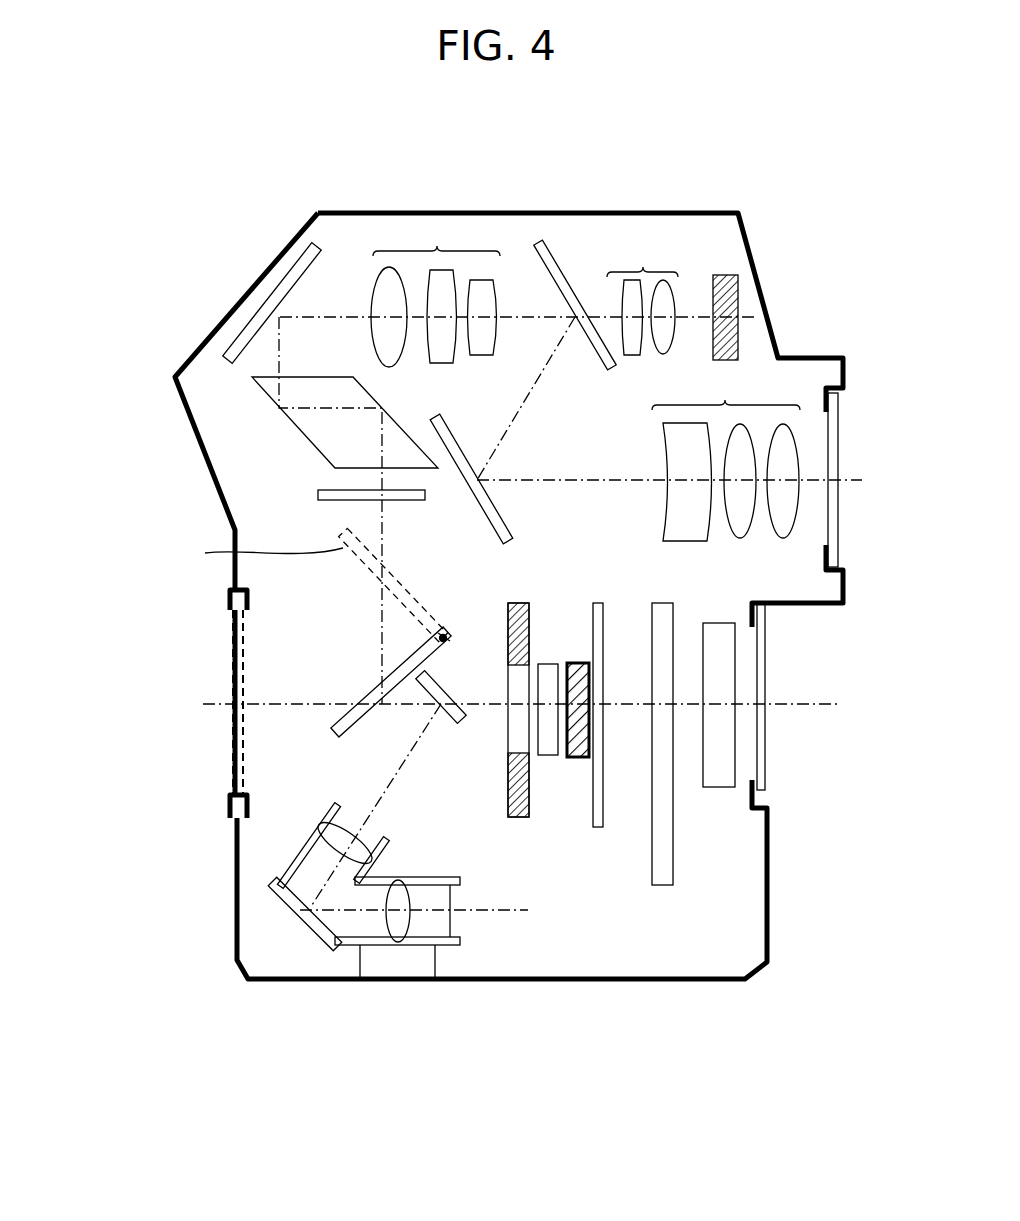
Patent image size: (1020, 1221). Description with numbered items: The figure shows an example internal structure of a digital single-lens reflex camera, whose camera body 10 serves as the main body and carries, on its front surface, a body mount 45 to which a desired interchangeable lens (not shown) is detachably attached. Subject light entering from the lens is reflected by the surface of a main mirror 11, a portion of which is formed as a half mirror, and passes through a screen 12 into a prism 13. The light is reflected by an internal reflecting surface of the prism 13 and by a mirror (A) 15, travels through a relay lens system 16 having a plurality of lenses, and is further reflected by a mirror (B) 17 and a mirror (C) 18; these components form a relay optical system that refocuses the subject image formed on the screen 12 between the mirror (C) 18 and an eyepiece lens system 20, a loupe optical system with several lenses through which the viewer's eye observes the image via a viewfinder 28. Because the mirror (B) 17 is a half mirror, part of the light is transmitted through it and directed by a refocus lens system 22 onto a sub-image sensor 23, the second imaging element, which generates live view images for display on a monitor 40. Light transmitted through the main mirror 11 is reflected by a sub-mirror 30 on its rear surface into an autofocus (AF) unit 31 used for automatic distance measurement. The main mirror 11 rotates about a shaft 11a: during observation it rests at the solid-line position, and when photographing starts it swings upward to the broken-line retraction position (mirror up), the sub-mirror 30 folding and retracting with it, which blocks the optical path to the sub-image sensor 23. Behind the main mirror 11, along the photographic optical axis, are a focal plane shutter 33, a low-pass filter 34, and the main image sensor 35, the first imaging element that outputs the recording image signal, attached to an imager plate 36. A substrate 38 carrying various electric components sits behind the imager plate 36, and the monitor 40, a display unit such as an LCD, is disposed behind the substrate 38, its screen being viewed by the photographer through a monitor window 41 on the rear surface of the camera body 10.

The camera body 10 is at (768, 828).
The main mirror 11 is at (362, 705).
The shaft 11a is at (443, 632).
The screen 12 is at (318, 495).
The prism 13 is at (313, 432).
The mirror (A) 15 is at (268, 313).
The relay lens system 16 is at (437, 245).
The mirror (B) 17 is at (545, 255).
The mirror (C) 18 is at (500, 523).
The eyepiece lens system 20 is at (727, 398).
The refocus lens system 22 is at (643, 265).
The sub-image sensor 23 is at (739, 295).
The viewfinder 28 is at (840, 440).
The sub-mirror 30 is at (433, 717).
The autofocus (AF) unit 31 is at (292, 905).
The focal plane shutter 33 is at (514, 817).
The low-pass filter 34 is at (545, 755).
The main image sensor 35 is at (578, 757).
The imager plate 36 is at (597, 827).
The substrate 38 is at (668, 872).
The monitor 40 is at (722, 742).
The monitor window 41 is at (765, 635).
The body mount 45 is at (233, 720).